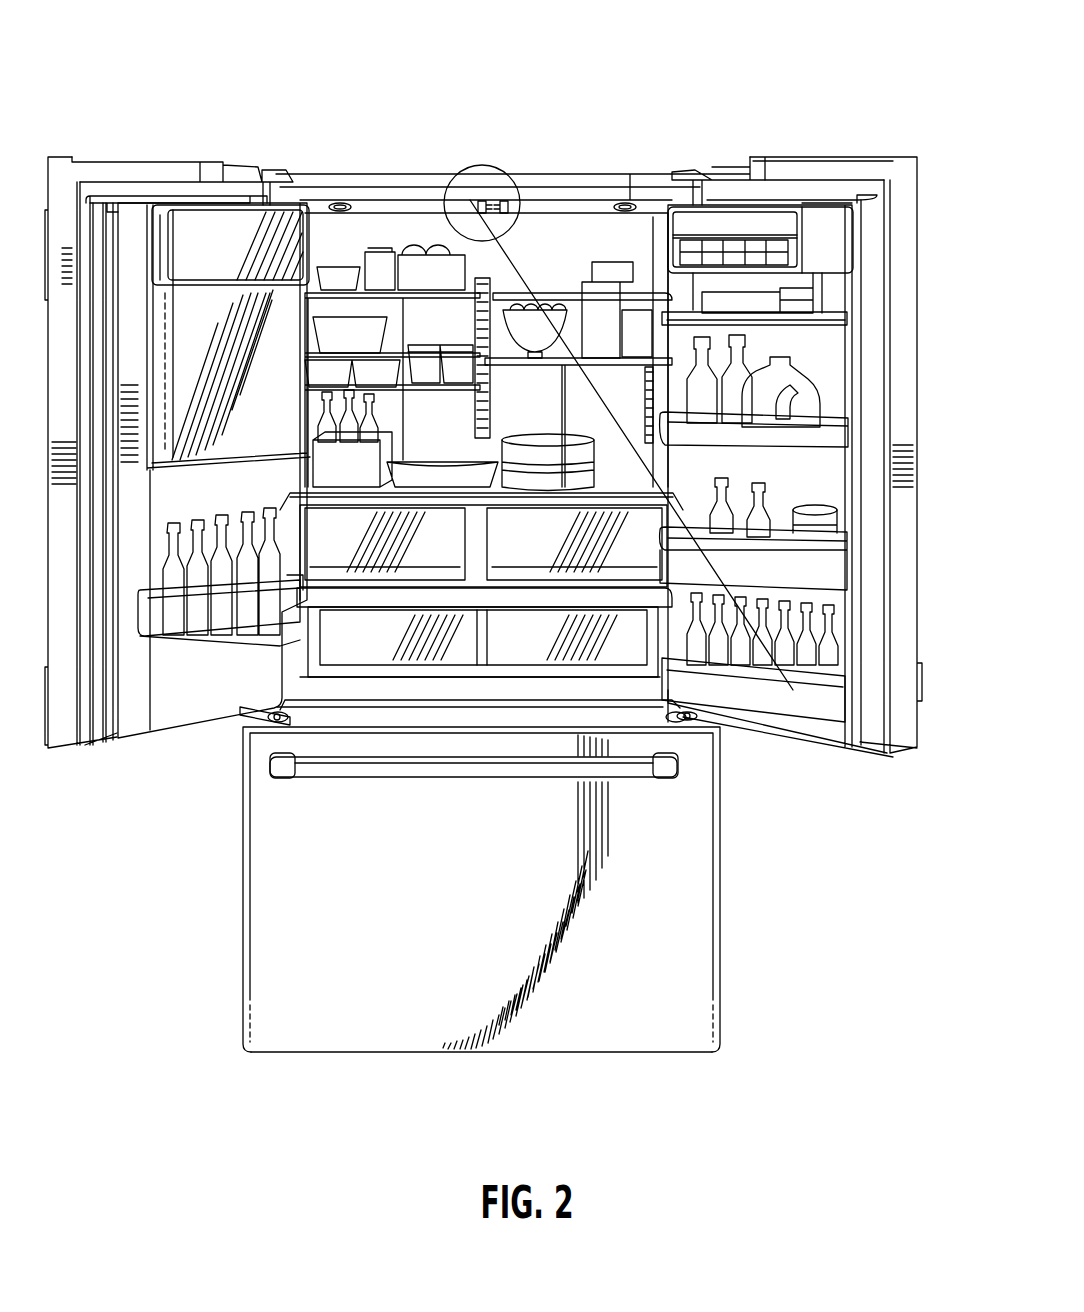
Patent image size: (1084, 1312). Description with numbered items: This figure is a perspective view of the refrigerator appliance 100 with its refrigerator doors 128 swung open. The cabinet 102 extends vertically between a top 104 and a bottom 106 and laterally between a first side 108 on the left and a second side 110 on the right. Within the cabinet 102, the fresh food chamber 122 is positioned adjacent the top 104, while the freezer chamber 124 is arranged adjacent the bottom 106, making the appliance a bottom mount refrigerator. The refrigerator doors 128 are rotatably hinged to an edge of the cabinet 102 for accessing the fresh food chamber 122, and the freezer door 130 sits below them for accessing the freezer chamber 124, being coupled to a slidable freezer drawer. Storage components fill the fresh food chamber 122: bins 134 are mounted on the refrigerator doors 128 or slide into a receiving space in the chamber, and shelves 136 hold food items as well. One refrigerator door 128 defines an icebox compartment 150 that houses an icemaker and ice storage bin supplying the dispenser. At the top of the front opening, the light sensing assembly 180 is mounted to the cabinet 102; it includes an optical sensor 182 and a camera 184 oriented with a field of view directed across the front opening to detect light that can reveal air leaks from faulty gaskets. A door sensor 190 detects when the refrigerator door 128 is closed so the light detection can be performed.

The refrigerator appliance 100 is at (860, 88).
The cabinet 102 is at (650, 178).
The top 104 is at (428, 175).
The bottom 106 is at (345, 1068).
The first side 108 is at (245, 1063).
The second side 110 is at (718, 1068).
The fresh food chamber 122 is at (592, 243).
The freezer chamber 124 is at (342, 878).
The refrigerator doors 128 is at (905, 550).
The freezer door 130 is at (471, 920).
The bins 134 is at (510, 552).
The shelves 136 is at (335, 275).
The icebox compartment 150 is at (212, 268).
The light sensing assembly 180 is at (472, 146).
The optical sensor 182 is at (343, 202).
The camera 184 is at (173, 687).
The door sensor 190 is at (497, 213).